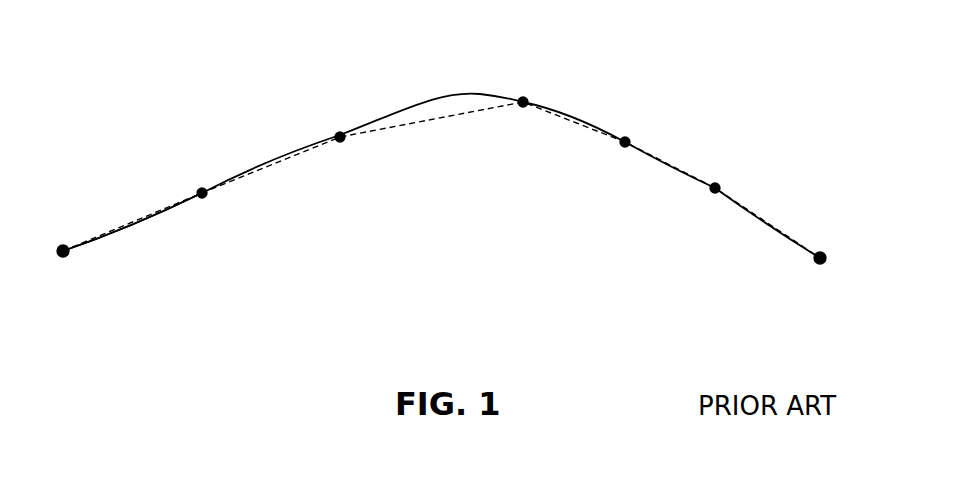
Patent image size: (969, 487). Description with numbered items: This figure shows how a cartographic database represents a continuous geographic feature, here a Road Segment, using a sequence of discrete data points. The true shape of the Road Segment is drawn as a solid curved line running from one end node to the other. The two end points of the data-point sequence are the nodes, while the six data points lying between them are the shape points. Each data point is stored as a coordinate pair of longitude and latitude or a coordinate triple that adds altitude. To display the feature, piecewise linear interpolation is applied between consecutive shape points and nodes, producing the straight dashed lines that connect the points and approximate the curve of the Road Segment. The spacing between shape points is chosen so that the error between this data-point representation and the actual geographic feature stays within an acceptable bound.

The road segment Road Segment is at (423, 192).